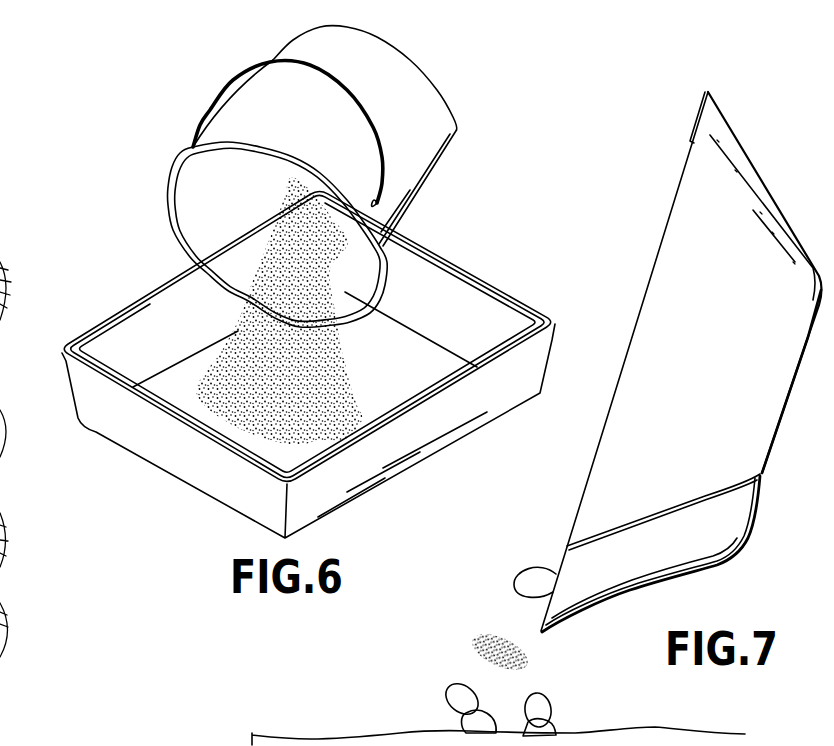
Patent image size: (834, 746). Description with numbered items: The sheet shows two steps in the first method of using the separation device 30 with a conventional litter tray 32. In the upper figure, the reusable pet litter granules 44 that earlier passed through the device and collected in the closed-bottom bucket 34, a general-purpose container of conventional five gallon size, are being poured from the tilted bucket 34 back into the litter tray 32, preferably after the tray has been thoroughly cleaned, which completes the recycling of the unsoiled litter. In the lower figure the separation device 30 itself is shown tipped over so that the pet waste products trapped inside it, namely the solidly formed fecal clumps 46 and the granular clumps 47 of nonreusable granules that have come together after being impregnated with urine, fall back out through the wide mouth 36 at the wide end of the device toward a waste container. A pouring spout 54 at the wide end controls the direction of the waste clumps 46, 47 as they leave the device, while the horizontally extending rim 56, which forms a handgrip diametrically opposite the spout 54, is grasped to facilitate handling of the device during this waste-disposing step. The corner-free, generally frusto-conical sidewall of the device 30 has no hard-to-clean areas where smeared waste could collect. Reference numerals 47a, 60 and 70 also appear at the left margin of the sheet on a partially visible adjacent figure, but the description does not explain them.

In FIG. 7, the separation device 30 is at (634, 336).
In FIG. 6, the litter tray 32 is at (520, 284).
In FIG. 6, the bucket 34 is at (438, 94).
In FIG. 7, the wide mouth 36 is at (584, 487).
In FIG. 6, the reusable pet litter granules 44 is at (340, 358).
In FIG. 7, the fecal clumps 46 is at (548, 712).
In FIG. 7, the granular clumps 47 is at (535, 663).
In FIG. 6, the litter particles 47a is at (0, 233).
In FIG. 7, the pouring spout 54 is at (538, 627).
In FIG. 7, the rim 56 is at (699, 113).
In FIG. 6, the scoop portion 60 is at (0, 318).
In FIG. 6, the scoop portion 70 is at (3, 628).